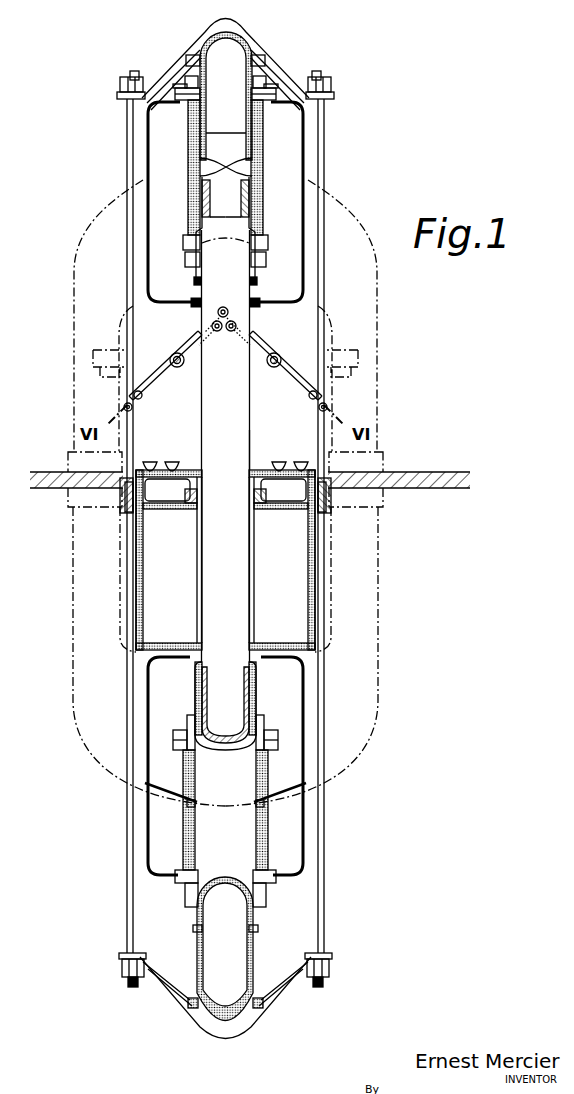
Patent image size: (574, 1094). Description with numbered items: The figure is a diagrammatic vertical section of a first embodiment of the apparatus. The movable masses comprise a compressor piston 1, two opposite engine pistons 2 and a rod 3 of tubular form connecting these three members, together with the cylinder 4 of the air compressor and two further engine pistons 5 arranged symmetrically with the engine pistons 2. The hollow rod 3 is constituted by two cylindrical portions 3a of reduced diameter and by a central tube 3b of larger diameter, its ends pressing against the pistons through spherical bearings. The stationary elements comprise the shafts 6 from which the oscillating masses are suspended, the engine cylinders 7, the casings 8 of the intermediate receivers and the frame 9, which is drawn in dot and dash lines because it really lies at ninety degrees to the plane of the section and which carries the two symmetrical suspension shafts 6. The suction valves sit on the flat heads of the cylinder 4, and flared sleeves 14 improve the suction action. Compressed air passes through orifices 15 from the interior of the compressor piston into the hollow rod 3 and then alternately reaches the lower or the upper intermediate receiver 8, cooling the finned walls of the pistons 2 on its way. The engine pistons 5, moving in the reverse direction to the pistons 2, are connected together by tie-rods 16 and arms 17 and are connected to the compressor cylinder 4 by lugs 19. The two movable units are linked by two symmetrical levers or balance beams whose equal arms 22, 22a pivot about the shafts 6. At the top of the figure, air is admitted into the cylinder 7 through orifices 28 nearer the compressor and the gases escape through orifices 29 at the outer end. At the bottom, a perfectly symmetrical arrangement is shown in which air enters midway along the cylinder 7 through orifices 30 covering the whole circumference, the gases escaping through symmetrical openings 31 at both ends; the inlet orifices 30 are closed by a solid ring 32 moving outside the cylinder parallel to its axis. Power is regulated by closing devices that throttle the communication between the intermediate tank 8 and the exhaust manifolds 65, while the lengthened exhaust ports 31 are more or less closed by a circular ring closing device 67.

The compressor piston 1 is at (168, 493).
The engine pistons 2 is at (264, 210).
The rod 3 is at (226, 446).
The cylindrical portions 3a is at (210, 210).
The central tube 3b is at (254, 446).
The cylinder 4 is at (145, 607).
The engine pistons 5 is at (253, 42).
The shafts 6 is at (175, 354).
The engine cylinders 7 is at (256, 282).
The casings of the intermediate receivers 8 is at (119, 840).
The frame 9 is at (73, 268).
The flared sleeves 14 is at (172, 463).
The orifices 15 is at (237, 503).
The tie-rods 16 is at (126, 156).
The arms 17 is at (172, 68).
The lugs 19 is at (123, 508).
The balance beam arm 22 is at (153, 383).
The balance beam arm 22a is at (257, 350).
The air admission orifices 28 is at (264, 250).
The exhaust orifices 29 is at (273, 88).
The air inlet orifices 30 is at (200, 815).
The exhaust openings 31 is at (277, 888).
The solid ring 32 is at (263, 810).
The exhaust manifolds 65 is at (282, 102).
The closing device 67 is at (188, 84).